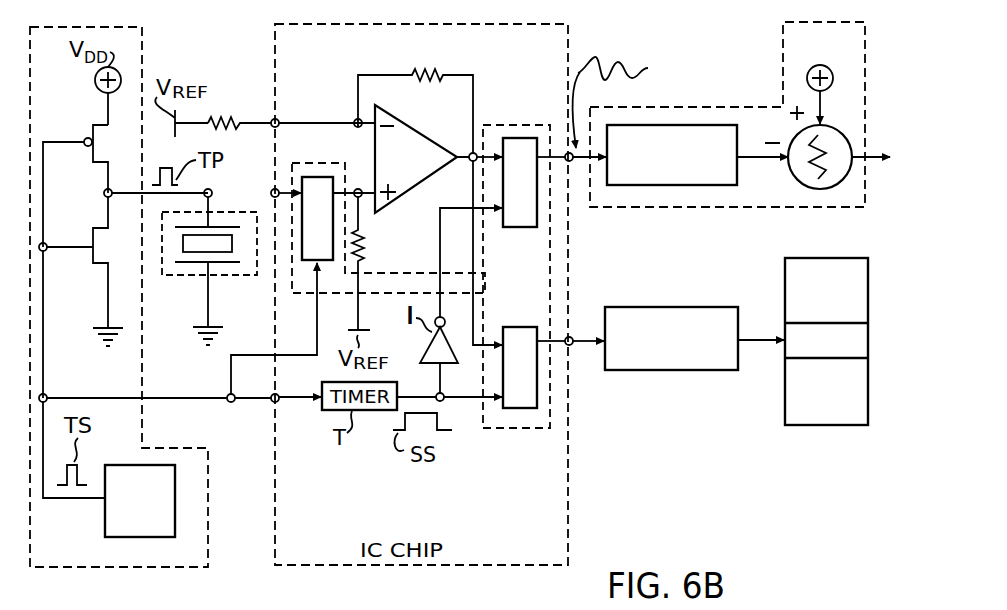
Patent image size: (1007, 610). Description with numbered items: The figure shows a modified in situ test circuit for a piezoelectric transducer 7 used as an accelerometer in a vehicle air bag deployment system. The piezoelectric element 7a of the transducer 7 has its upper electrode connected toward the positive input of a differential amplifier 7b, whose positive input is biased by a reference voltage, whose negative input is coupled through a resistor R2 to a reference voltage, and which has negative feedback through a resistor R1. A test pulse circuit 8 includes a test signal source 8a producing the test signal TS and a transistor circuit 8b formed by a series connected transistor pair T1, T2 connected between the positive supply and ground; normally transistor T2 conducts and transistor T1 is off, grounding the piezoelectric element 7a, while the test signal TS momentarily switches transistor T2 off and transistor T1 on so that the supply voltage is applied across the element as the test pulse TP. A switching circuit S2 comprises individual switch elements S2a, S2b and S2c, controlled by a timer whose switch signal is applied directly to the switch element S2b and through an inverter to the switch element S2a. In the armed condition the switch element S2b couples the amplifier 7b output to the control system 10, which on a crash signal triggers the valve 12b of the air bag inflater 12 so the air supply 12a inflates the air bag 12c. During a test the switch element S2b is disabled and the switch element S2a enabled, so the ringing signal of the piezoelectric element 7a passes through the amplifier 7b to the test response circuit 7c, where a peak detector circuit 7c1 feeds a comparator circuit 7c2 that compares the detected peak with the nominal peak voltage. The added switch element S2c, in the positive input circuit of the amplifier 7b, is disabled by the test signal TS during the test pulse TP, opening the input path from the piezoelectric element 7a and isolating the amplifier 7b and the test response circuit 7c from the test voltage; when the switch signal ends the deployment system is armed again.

The piezoelectric transducer 7 is at (203, 271).
The piezoelectric element 7a is at (216, 252).
The differential amplifier 7b is at (411, 131).
The test response circuit 7c is at (668, 106).
The peak detector circuit 7c1 is at (722, 125).
The comparator circuit 7c2 is at (822, 189).
The test pulse circuit 8 is at (172, 447).
The test signal source 8a is at (152, 514).
The transistor circuit 8b is at (107, 205).
The control system 10 is at (656, 268).
The air bag inflater 12 is at (789, 256).
The air supply 12a is at (785, 280).
The valve 12b is at (785, 353).
The air bag 12c is at (788, 412).
The transistor T1 is at (93, 125).
The transistor T2 is at (93, 265).
The feedback resistor R1 is at (438, 74).
The resistor R2 is at (222, 120).
The switching circuit S2 is at (533, 274).
The switch element S2a is at (518, 137).
The switch element S2b is at (517, 408).
The switch element S2c is at (338, 143).